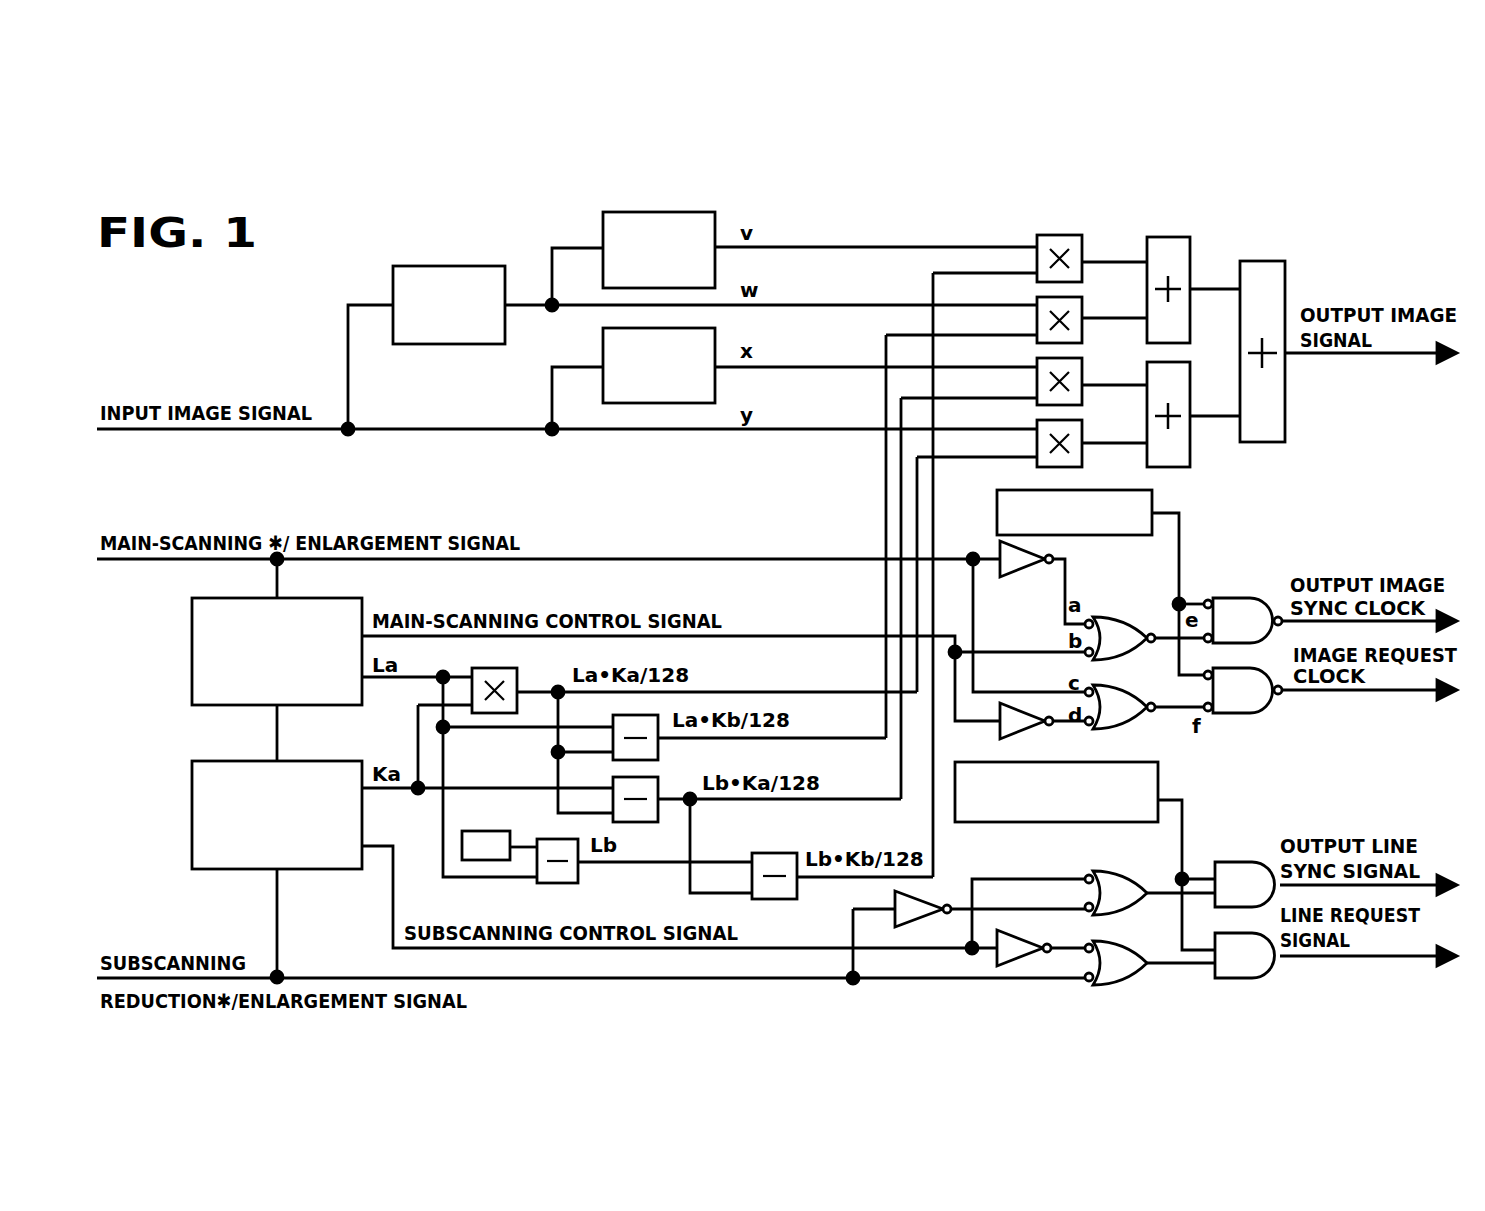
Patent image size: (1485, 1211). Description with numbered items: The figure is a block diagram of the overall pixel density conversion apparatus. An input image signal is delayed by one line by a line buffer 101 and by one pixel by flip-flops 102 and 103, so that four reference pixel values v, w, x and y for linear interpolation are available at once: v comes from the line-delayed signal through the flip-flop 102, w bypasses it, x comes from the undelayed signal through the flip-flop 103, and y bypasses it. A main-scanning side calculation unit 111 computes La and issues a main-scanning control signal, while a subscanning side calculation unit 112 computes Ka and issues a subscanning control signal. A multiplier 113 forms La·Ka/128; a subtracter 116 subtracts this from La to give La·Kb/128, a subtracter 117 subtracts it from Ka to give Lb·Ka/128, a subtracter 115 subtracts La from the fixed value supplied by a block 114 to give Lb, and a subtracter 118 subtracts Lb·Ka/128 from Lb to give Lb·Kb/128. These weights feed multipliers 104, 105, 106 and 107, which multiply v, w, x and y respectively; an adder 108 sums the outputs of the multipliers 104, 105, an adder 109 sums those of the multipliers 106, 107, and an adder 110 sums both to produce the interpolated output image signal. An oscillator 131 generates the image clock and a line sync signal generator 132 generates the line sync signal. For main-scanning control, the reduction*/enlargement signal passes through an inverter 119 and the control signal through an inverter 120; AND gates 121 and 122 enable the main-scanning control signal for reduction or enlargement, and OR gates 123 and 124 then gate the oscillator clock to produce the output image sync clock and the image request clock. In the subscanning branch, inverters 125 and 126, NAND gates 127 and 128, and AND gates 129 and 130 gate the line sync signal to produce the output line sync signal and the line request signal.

The line buffer 101 is at (448, 266).
The flip-flop 102 is at (603, 232).
The flip-flop 103 is at (603, 355).
The multiplier 104 is at (1082, 250).
The multiplier 105 is at (1082, 313).
The multiplier 106 is at (1082, 376).
The multiplier 107 is at (1082, 437).
The adder 108 is at (1160, 237).
The adder 109 is at (1190, 400).
The adder 110 is at (1252, 261).
The main-scanning side calculation unit 111 is at (318, 598).
The subscanning side calculation unit 112 is at (300, 761).
The multiplier 113 is at (493, 668).
The block for outputting a fixed value 114 is at (498, 831).
The subtracter 115 is at (578, 876).
The subtracter 116 is at (631, 717).
The subtracter 117 is at (630, 822).
The subtracter 118 is at (763, 853).
The inverter 119 is at (1000, 548).
The inverter 120 is at (1015, 734).
The AND gate 121 is at (1118, 617).
The AND gate 122 is at (1118, 686).
The OR gate 123 is at (1232, 598).
The OR gate 124 is at (1232, 713).
The inverter 125 is at (895, 897).
The inverter 126 is at (1015, 962).
The NAND gate 127 is at (1112, 871).
The NAND gate 128 is at (1120, 941).
The AND gate 129 is at (1226, 862).
The AND gate 130 is at (1250, 978).
The oscillator 131 is at (1152, 496).
The line sync signal generator 132 is at (1158, 782).